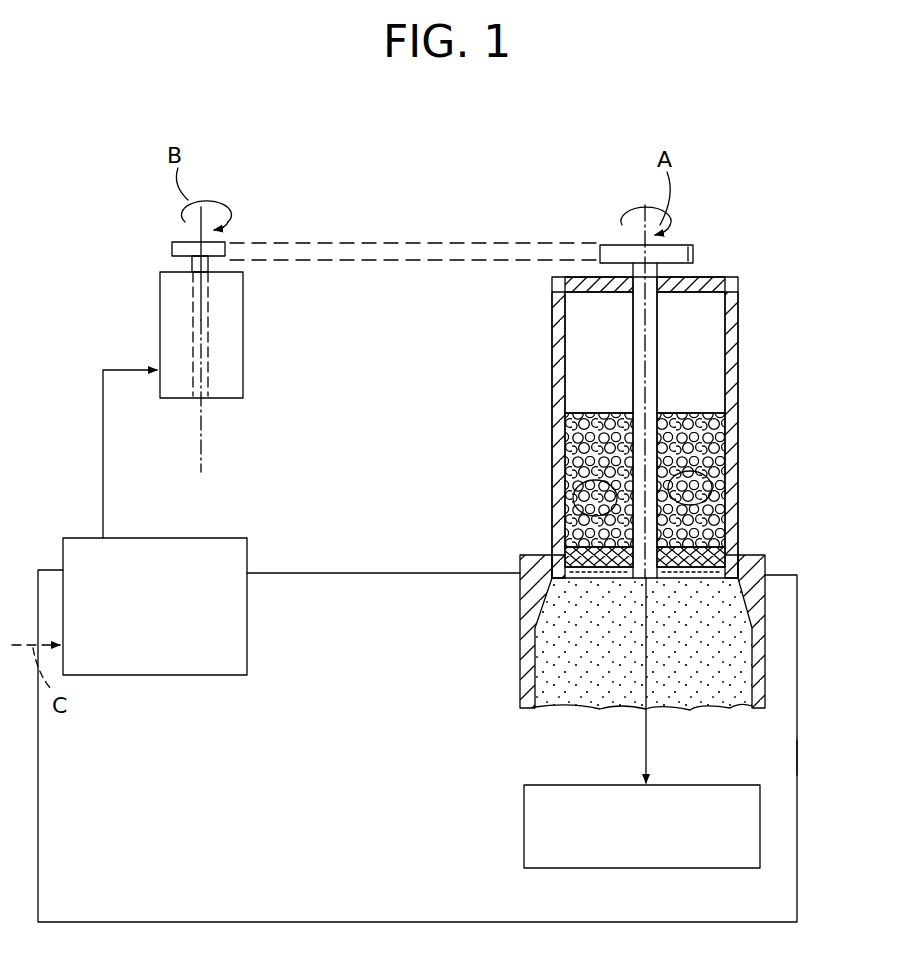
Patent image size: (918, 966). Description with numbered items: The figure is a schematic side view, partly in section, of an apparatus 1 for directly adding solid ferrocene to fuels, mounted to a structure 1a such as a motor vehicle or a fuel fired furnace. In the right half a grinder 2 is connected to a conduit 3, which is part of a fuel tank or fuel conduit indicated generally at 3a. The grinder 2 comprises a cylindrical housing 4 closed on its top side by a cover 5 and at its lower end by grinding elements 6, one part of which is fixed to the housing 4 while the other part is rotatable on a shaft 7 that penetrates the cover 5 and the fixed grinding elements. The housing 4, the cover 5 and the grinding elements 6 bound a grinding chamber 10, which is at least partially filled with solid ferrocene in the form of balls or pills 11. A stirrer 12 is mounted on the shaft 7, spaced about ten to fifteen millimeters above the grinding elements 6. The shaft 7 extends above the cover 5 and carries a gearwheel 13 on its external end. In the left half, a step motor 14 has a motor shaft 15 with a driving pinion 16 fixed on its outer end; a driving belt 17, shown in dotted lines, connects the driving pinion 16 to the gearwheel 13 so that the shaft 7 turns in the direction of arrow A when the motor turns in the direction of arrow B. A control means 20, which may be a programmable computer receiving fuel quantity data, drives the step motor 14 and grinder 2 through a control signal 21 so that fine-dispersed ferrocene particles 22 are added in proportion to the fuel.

The apparatus 1 is at (438, 150).
The structure 1a is at (797, 757).
The grinder 2 is at (745, 271).
The conduit 3 is at (760, 662).
The fuel tank or fuel conduit 3a is at (762, 823).
The cylindrical housing 4 is at (733, 413).
The cover 5 is at (560, 291).
The grinding elements 6 is at (560, 541).
The shaft 7 is at (652, 356).
The grinding chamber 10 is at (713, 352).
The balls or pills 11 is at (722, 461).
The stirrer 12 is at (727, 513).
The gearwheel 13 is at (668, 252).
The step motor 14 is at (243, 340).
The motor shaft 15 is at (192, 262).
The driving pinion 16 is at (212, 247).
The driving belt 17 is at (381, 243).
The control means 20 is at (162, 607).
The control signal 21 is at (103, 443).
The fine-dispersed ferrocene particles 22 is at (601, 695).